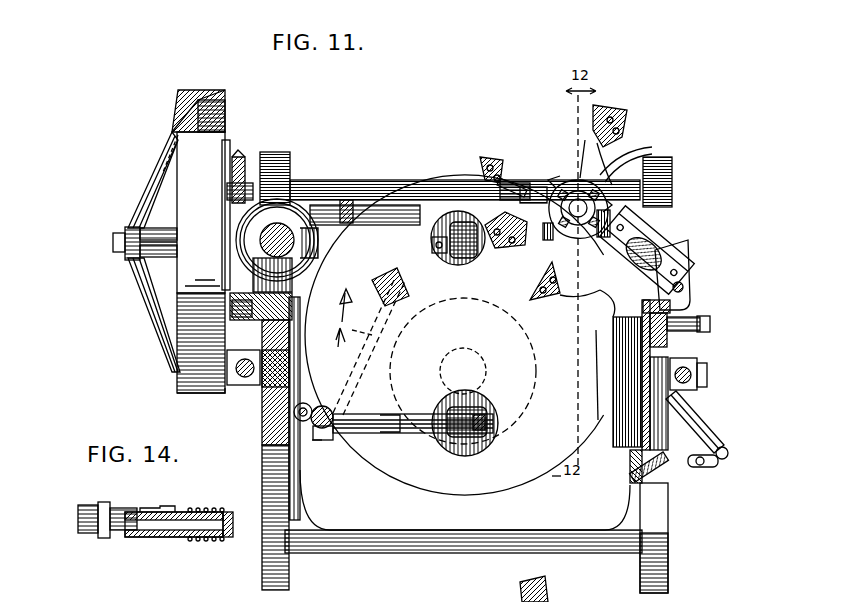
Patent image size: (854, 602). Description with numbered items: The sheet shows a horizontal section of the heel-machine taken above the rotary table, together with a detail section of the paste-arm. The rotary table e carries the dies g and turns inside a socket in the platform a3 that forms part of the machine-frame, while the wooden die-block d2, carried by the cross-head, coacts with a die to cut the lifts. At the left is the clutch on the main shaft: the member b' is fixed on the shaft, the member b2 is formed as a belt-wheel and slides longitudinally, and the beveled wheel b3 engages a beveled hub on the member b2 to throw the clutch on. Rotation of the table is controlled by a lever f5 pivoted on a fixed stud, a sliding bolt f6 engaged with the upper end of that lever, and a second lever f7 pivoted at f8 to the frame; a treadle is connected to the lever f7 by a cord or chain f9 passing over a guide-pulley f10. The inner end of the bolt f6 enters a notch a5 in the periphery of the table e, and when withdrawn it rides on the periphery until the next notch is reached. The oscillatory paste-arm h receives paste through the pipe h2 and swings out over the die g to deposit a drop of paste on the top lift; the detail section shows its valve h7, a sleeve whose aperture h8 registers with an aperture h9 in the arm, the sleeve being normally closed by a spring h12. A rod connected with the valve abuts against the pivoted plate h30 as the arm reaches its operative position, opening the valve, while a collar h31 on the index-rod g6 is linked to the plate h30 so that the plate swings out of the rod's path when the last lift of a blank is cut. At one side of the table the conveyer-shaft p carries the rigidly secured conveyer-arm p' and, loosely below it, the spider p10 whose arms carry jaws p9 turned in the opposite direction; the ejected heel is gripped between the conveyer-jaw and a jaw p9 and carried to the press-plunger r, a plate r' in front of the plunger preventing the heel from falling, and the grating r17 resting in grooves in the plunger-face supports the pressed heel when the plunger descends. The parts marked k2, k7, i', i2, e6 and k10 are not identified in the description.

In FIG. 11, the clutch member b' is at (146, 252).
In FIG. 11, the belt-wheel clutch member b2 is at (215, 148).
In FIG. 11, the beveled wheel b3 is at (247, 158).
In FIG. 11, the gear hub k2 is at (296, 172).
In FIG. 11, the gear k7 is at (280, 228).
In FIG. 11, the shaft i' is at (465, 197).
In FIG. 11, the collar i2 is at (348, 200).
In FIG. 11, the rotary table e is at (454, 335).
In FIG. 11, the stud e6 is at (468, 407).
In FIG. 11, the die g is at (442, 403).
In FIG. 11, the index-rod g6 is at (366, 412).
In FIG. 11, the conveyer-shaft p is at (566, 187).
In FIG. 11, the conveyer-arm p' is at (513, 191).
In FIG. 11, the spider jaw p9 is at (503, 190).
In FIG. 11, the spider p10 is at (598, 168).
In FIG. 11, the grating r17 is at (675, 238).
In FIG. 11, the press-plunger r is at (691, 275).
In FIG. 11, the plate r' is at (576, 320).
In FIG. 11, the notch a5 is at (598, 330).
In FIG. 11, the platform a3 is at (451, 375).
In FIG. 11, the die-block d2 is at (537, 382).
In FIG. 11, the lever f5 is at (707, 315).
In FIG. 11, the sliding bolt f6 is at (712, 325).
In FIG. 11, the second lever f7 is at (700, 432).
In FIG. 11, the pivot f8 is at (668, 348).
In FIG. 11, the cord or chain f9 is at (695, 465).
In FIG. 11, the guide-pulley f10 is at (660, 480).
In FIG. 11, the paste-arm h is at (362, 434).
In FIG. 11, the pipe h2 is at (285, 429).
In FIG. 11, the valve h7 is at (468, 456).
In FIG. 14, the valve h7 is at (150, 537).
In FIG. 14, the aperture h8 is at (173, 537).
In FIG. 14, the aperture h9 is at (180, 538).
In FIG. 14, the spring h12 is at (203, 509).
In FIG. 11, the pivoted plate h30 is at (324, 441).
In FIG. 11, the collar h31 is at (304, 404).
In FIG. 11, the rod k10 is at (399, 440).